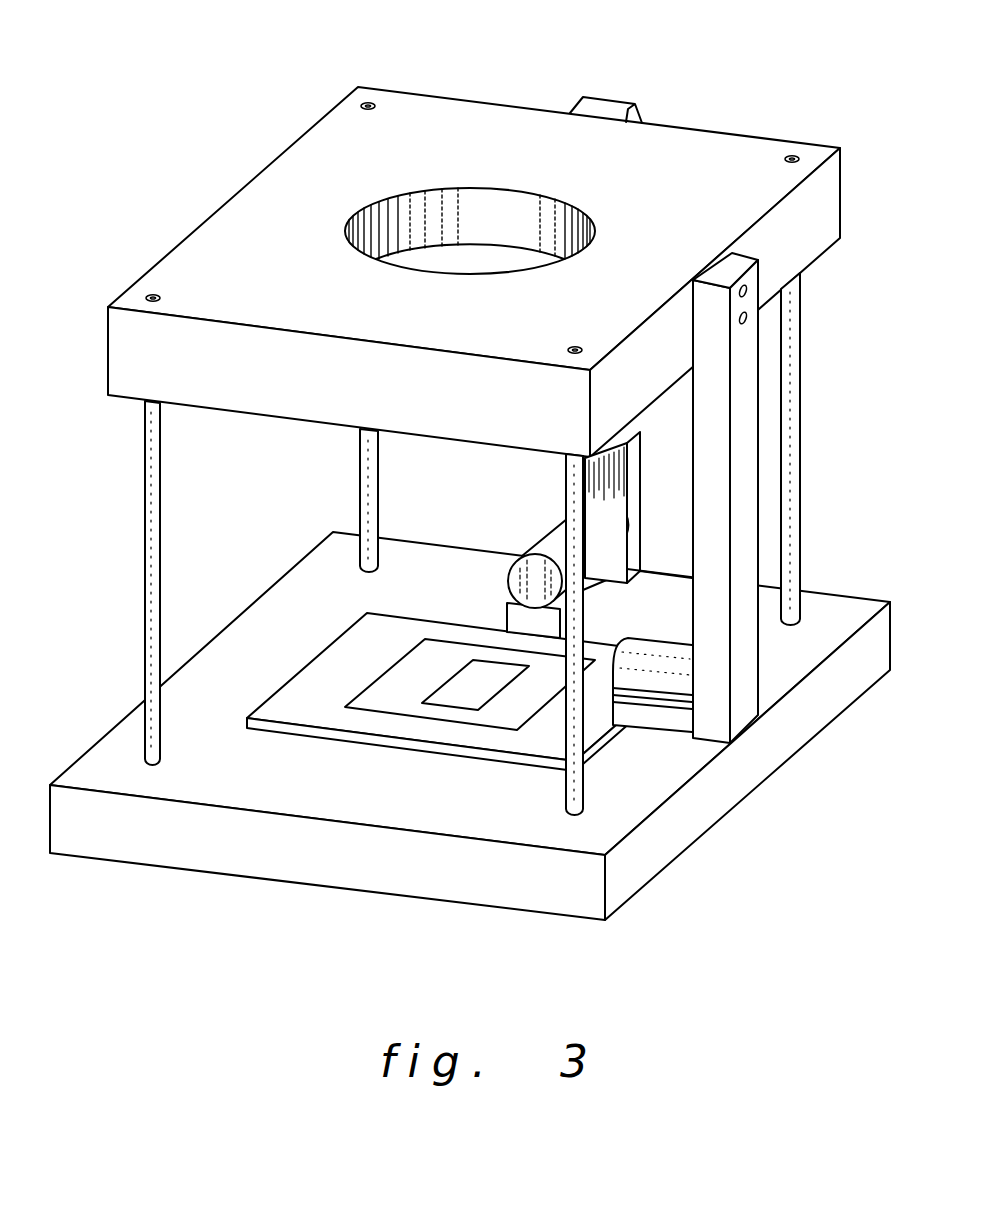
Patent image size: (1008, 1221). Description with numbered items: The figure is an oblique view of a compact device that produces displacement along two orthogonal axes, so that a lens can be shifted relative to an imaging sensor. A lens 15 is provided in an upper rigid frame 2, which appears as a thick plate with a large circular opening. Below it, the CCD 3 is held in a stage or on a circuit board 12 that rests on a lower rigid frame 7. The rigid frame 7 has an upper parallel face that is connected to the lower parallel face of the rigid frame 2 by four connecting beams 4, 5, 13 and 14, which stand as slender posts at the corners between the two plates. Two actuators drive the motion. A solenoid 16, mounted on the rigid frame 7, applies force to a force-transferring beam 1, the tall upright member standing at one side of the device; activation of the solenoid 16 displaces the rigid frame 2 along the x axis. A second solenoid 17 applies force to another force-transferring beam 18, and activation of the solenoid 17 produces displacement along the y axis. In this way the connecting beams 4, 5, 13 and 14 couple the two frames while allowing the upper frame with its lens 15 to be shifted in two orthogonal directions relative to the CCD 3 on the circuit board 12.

The force-transferring beam 1 is at (743, 695).
The rigid frame 2 is at (678, 155).
The CCD 3 is at (480, 673).
The connecting beam 4 is at (803, 433).
The connecting beam 5 is at (587, 803).
The rigid frame 7 is at (172, 840).
The circuit board 12 is at (487, 753).
The connecting beam 13 is at (155, 617).
The connecting beam 14 is at (365, 483).
The lens 15 is at (482, 213).
The solenoid 16 is at (662, 678).
The solenoid 17 is at (557, 523).
The force-transferring beam 18 is at (632, 510).